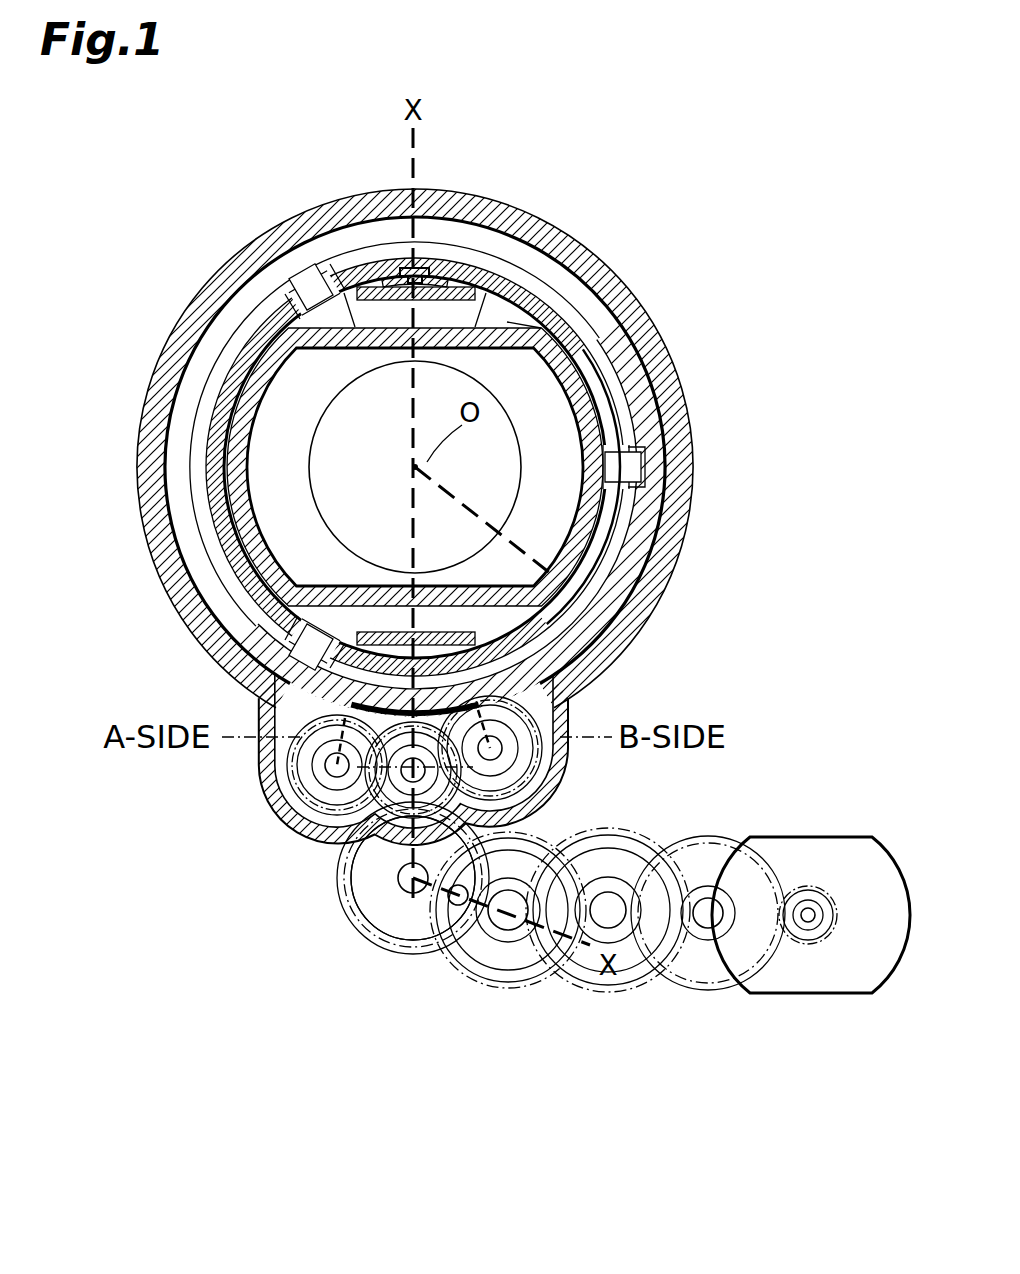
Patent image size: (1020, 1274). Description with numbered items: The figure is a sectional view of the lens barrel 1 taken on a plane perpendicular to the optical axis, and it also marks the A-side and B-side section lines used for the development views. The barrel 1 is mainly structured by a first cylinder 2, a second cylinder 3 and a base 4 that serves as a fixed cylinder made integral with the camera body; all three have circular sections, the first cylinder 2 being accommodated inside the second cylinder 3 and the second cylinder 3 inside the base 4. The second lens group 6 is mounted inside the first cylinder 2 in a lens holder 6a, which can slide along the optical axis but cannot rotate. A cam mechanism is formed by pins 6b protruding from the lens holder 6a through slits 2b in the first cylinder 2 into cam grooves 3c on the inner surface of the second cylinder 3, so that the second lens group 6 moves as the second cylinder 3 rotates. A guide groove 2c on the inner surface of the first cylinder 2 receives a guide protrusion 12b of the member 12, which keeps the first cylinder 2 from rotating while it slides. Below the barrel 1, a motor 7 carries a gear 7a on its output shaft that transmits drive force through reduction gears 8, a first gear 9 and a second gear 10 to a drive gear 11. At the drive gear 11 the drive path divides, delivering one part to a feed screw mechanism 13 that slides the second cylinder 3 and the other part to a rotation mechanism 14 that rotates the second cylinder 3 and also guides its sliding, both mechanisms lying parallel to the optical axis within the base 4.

The lens barrel 1 is at (680, 232).
The first cylinder 2 is at (617, 520).
The slits 2b is at (342, 268).
The guide groove 2c is at (427, 268).
The second cylinder 3 is at (627, 583).
The cam grooves 3c is at (302, 250).
The base (fixed cylinder) 4 is at (619, 628).
The second lens group 6 is at (342, 425).
The lens holder 6a is at (522, 300).
The pins 6b is at (305, 255).
The motor 7 is at (820, 860).
The gear 7a is at (817, 935).
The reduction gears 8 is at (770, 1012).
The first gear 9 is at (385, 918).
The second gear 10 is at (413, 878).
The drive gear 11 is at (350, 840).
The member 12 is at (480, 290).
The guide protrusion 12b is at (457, 272).
The feed screw mechanism 13 is at (295, 787).
The rotation mechanism 14 is at (525, 770).